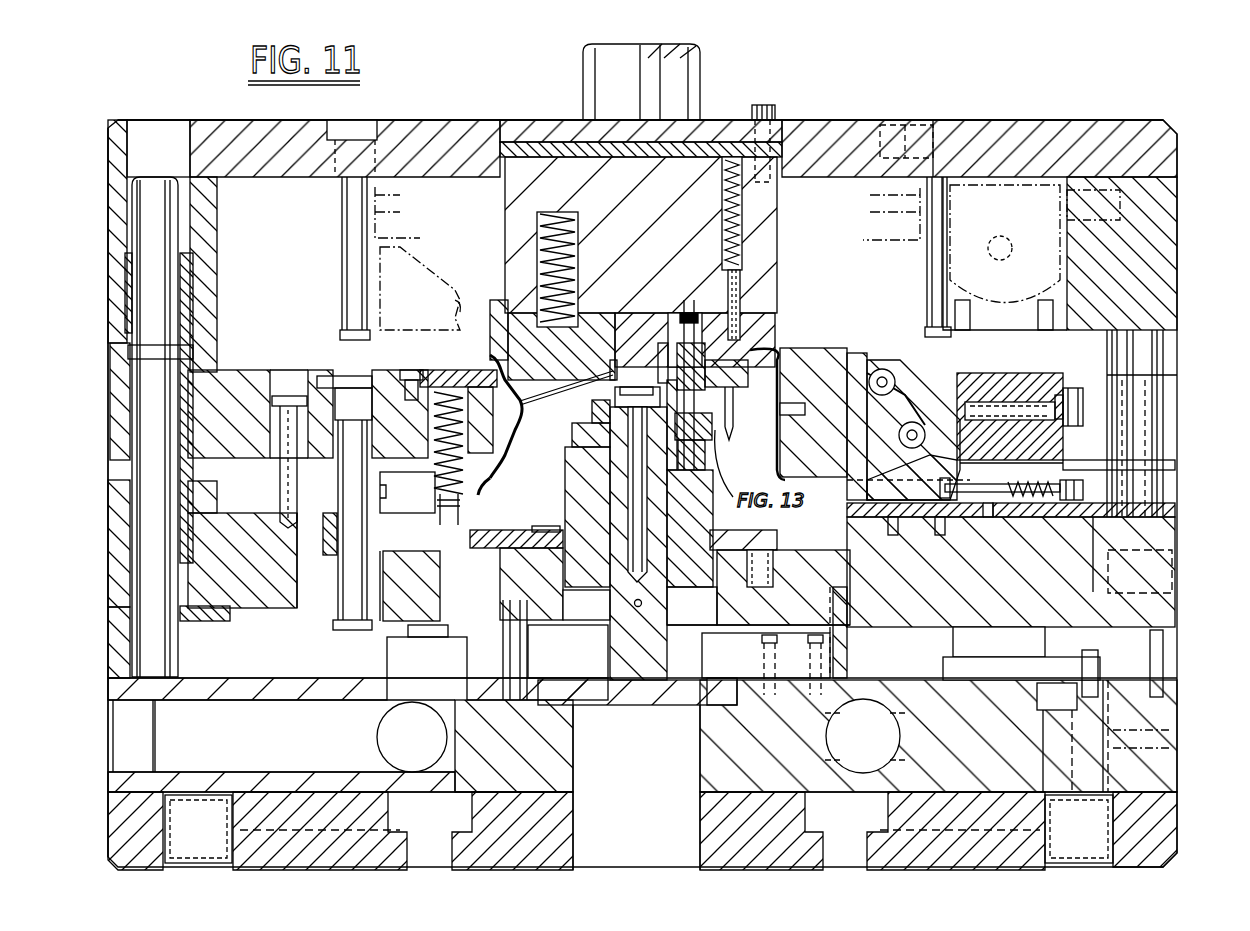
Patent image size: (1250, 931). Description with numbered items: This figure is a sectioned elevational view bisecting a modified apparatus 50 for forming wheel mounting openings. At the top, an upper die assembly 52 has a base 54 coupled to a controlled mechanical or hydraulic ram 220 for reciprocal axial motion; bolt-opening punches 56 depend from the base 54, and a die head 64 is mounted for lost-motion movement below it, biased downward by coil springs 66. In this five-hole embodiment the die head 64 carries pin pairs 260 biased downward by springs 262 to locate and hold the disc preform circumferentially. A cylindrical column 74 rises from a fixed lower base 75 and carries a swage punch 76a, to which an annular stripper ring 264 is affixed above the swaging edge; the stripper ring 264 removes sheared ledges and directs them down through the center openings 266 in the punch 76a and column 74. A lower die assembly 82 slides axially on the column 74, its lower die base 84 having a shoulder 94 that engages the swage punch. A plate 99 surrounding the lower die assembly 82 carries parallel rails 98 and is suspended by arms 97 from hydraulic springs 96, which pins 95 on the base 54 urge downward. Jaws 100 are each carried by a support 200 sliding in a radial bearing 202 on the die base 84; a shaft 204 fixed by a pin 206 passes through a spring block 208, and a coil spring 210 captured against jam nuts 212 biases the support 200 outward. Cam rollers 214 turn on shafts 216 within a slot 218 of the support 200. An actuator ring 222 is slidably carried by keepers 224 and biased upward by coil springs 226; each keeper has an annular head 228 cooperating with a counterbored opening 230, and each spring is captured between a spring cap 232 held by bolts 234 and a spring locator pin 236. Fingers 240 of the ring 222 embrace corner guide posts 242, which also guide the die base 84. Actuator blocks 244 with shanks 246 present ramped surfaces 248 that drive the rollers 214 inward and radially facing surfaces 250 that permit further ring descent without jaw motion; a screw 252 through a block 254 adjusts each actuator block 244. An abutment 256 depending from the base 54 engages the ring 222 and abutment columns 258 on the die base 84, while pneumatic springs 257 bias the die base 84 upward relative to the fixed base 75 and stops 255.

The apparatus 50 is at (1217, 188).
The upper die assembly 52 is at (993, 117).
The base 54 is at (1103, 127).
The bolt-opening punches 56 is at (665, 318).
The die head 64 is at (458, 314).
The coil springs 66 is at (537, 242).
The cylindrical column 74 is at (610, 655).
The fixed lower base 75 is at (108, 683).
The swage punch 76a is at (580, 412).
The lower die assembly 82 is at (1190, 586).
The lower die base 84 is at (897, 627).
The shoulder 94 is at (570, 438).
The pins 95 is at (343, 250).
The hydraulic springs 96 is at (343, 573).
The arms 97 is at (398, 478).
The rails 98 is at (557, 553).
The plate 99 is at (455, 540).
The jaws 100 is at (823, 339).
The support 200 is at (853, 350).
The radial bearing 202 is at (893, 520).
The shaft 204 is at (997, 517).
The pin 206 is at (940, 520).
The spring block 208 is at (1035, 517).
The coil spring 210 is at (1063, 467).
The jam nuts 212 is at (1083, 500).
The cam rollers 214 is at (868, 362).
The shafts 216 is at (880, 369).
The slot 218 is at (920, 462).
The ram 220 is at (700, 83).
The actuator ring 222 is at (1182, 371).
The keepers 224 is at (277, 480).
The coil springs 226 is at (463, 500).
The annular head 228 is at (285, 370).
The counterbored opening 230 is at (297, 367).
The spring cap 232 is at (448, 378).
The bolts 234 is at (410, 375).
The spring locator pin 236 is at (490, 475).
The fingers 240 is at (110, 418).
The corner guide post 242 is at (138, 355).
The actuator blocks 244 is at (950, 392).
The shanks 246 is at (1010, 419).
The ramped lower inside surfaces 248 is at (1007, 417).
The radially facing surfaces 250 is at (899, 437).
The screw 252 is at (1083, 420).
The block 254 is at (1083, 398).
The stops 255 is at (530, 640).
The abutment 256 is at (218, 222).
The pneumatic springs 257 is at (387, 657).
The abutment columns 258 is at (1170, 517).
The pin pairs 260 is at (733, 428).
The springs 262 is at (716, 229).
The stripper ring 264 is at (640, 382).
The center openings 266 is at (580, 515).